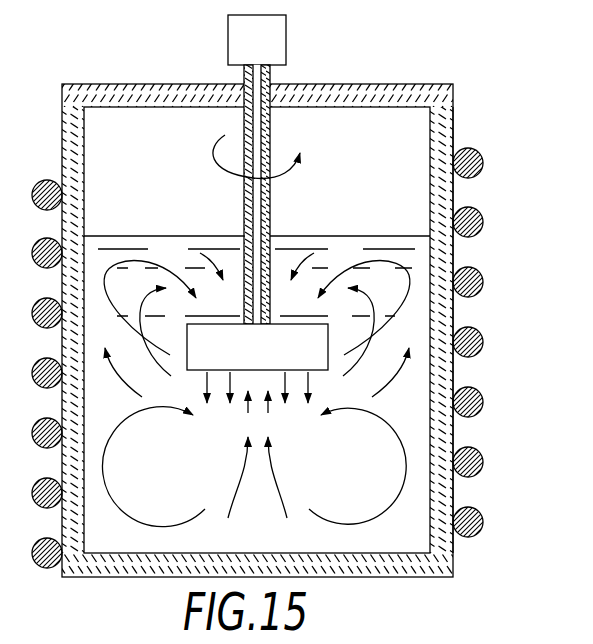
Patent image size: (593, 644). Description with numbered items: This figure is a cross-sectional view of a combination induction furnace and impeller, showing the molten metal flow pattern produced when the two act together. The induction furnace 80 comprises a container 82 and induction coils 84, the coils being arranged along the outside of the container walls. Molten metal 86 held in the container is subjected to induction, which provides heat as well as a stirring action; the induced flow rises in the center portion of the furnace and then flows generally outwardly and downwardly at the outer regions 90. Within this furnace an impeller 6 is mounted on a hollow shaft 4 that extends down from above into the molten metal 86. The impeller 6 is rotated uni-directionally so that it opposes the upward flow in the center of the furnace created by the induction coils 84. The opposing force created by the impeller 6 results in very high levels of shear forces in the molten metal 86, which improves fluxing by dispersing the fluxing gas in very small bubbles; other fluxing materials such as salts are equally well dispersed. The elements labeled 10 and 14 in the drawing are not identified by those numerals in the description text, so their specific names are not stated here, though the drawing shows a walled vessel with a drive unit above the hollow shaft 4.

The hollow shaft 4 is at (270, 216).
The impeller 6 is at (318, 350).
The vessel 10 is at (361, 88).
The motor 14 is at (286, 46).
The induction furnace 80 is at (571, 160).
The container 82 is at (453, 252).
The induction coils 84 is at (482, 338).
The molten metal 86 is at (345, 505).
The outer regions 90 is at (420, 427).